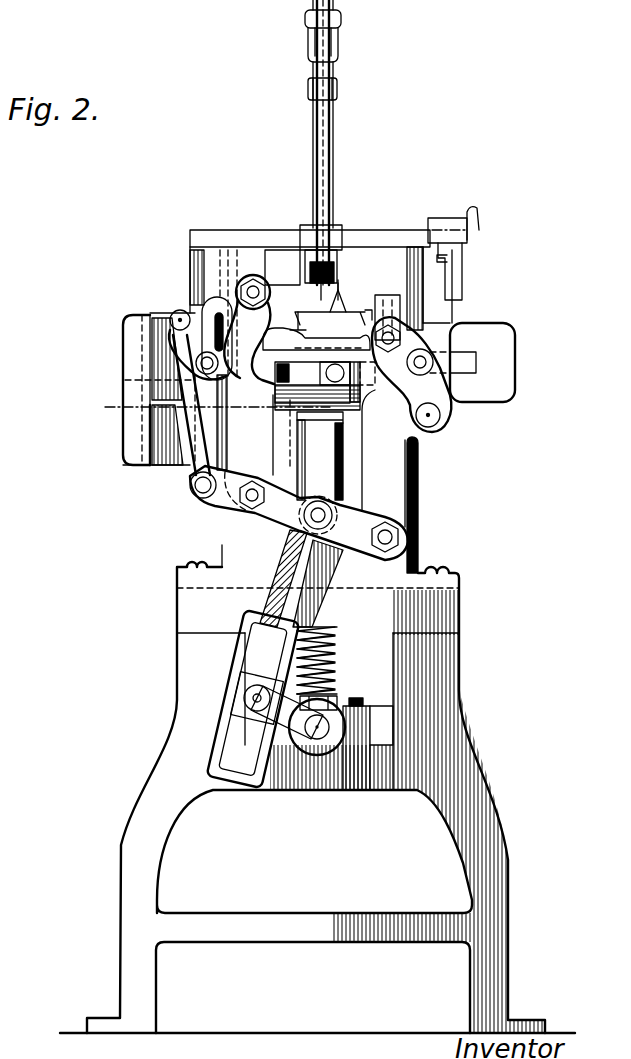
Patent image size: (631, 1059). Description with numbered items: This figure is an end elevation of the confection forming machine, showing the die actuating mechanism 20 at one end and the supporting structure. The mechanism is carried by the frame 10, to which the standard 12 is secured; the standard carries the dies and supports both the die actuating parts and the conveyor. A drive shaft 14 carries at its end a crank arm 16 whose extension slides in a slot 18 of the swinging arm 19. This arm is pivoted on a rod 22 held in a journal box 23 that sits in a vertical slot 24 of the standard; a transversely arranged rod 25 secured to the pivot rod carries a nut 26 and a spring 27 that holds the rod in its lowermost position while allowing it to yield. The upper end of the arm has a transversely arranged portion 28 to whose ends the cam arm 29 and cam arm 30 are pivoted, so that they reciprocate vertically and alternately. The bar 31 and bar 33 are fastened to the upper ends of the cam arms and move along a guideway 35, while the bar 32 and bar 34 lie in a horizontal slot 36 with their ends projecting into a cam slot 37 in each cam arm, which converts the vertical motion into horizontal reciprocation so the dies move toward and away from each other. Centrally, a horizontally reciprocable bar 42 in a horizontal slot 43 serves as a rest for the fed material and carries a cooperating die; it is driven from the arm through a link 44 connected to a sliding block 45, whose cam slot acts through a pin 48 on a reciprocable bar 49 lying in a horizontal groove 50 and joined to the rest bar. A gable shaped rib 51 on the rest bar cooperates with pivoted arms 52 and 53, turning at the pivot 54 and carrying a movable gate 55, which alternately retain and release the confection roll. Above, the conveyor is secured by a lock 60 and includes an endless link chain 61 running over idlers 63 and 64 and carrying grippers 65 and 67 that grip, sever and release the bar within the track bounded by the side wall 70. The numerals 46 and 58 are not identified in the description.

The frame 10 is at (450, 700).
The standard 12 is at (420, 478).
The drive shaft 14 is at (352, 756).
The crank arm 16 is at (305, 745).
The slot 18 is at (230, 727).
The arm 19 is at (268, 598).
The die actuating mechanism 20 is at (383, 458).
The rod 22 is at (318, 503).
The journal box 23 is at (285, 524).
The vertical slot 24 is at (335, 465).
The transversely arranged rod 25 is at (337, 675).
The nut 26 is at (338, 697).
The spring 27 is at (336, 646).
The transversely arranged portion 28 is at (366, 556).
The cam arm 29 is at (426, 430).
The cam arm 30 is at (217, 422).
The bar 31 is at (263, 271).
The bar 32 is at (240, 380).
The bar 33 is at (389, 300).
The bar 34 is at (465, 353).
The guideway 35 is at (238, 245).
The horizontal slot 36 is at (470, 380).
The cam slot 37 is at (192, 312).
The bar 42 is at (165, 312).
The horizontal slot 43 is at (316, 340).
The link 44 is at (198, 476).
The sliding block 45 is at (150, 368).
The base 46 is at (150, 463).
The pin 48 is at (175, 405).
The reciprocable bar 49 is at (325, 382).
The horizontal groove 50 is at (305, 424).
The gable shaped rib 51 is at (333, 290).
The arm 52 is at (330, 306).
The arm 53 is at (345, 296).
The pivot 54 is at (297, 309).
The movable gate 55 is at (376, 295).
The rod 58 is at (330, 145).
The lock 60 is at (470, 233).
The endless link chain 61 is at (313, 110).
The idler 63 is at (330, 220).
The idler 64 is at (312, 45).
The gripper 65 is at (337, 97).
The gripper 67 is at (282, 267).
The side wall 70 is at (336, 280).